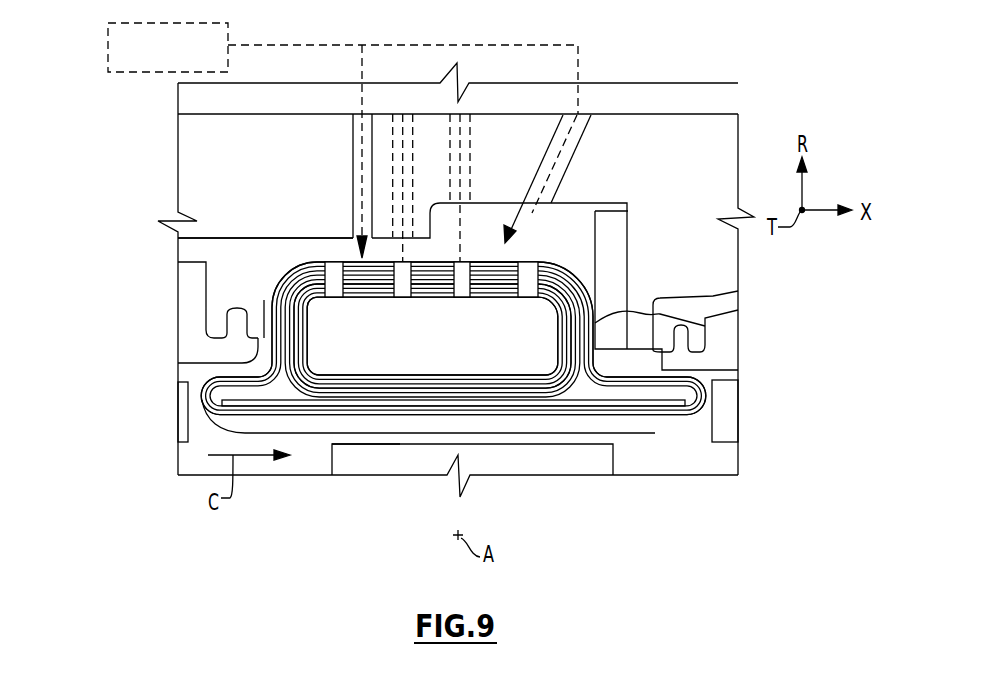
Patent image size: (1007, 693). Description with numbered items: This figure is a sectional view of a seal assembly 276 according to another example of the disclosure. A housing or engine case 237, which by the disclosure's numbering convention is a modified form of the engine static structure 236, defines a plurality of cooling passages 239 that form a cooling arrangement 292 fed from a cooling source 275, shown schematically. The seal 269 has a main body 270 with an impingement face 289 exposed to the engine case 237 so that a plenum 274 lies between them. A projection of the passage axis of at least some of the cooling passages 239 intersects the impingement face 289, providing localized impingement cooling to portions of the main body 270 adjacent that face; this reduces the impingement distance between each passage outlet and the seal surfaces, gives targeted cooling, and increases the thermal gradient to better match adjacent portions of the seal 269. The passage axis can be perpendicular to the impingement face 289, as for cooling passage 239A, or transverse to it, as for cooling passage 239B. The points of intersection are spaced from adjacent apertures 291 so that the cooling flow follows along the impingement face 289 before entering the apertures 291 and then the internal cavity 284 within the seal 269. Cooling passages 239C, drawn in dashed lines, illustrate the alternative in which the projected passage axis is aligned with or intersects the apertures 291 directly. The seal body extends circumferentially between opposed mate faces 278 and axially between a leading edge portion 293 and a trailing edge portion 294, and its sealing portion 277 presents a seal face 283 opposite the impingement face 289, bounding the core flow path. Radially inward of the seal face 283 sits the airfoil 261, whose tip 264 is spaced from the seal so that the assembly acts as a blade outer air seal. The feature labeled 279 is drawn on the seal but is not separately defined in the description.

The controller 275 is at (152, 57).
The housing 292 is at (630, 94).
The seal assembly 276 is at (165, 152).
The stator core 236 is at (192, 185).
The engine case 237 is at (402, 276).
The cooling passages 239 is at (353, 150).
The cooling passage 239A is at (362, 159).
The cooling passage 239B is at (573, 153).
The cooling passages 239C is at (451, 130).
The coil 274 is at (300, 266).
The coil end turn 278 is at (680, 394).
The main body 270 is at (577, 278).
The coil insulation 279 is at (590, 296).
The apertures 291 is at (327, 290).
The internal cavity 284 is at (452, 342).
The impingement face 289 is at (498, 262).
The seal 269 is at (555, 259).
The first slot 293 is at (264, 300).
The second slot 294 is at (733, 322).
The slot liner 283 is at (673, 418).
The bottom wall 277 is at (655, 427).
The base 261 is at (330, 463).
The base surface 264 is at (358, 445).